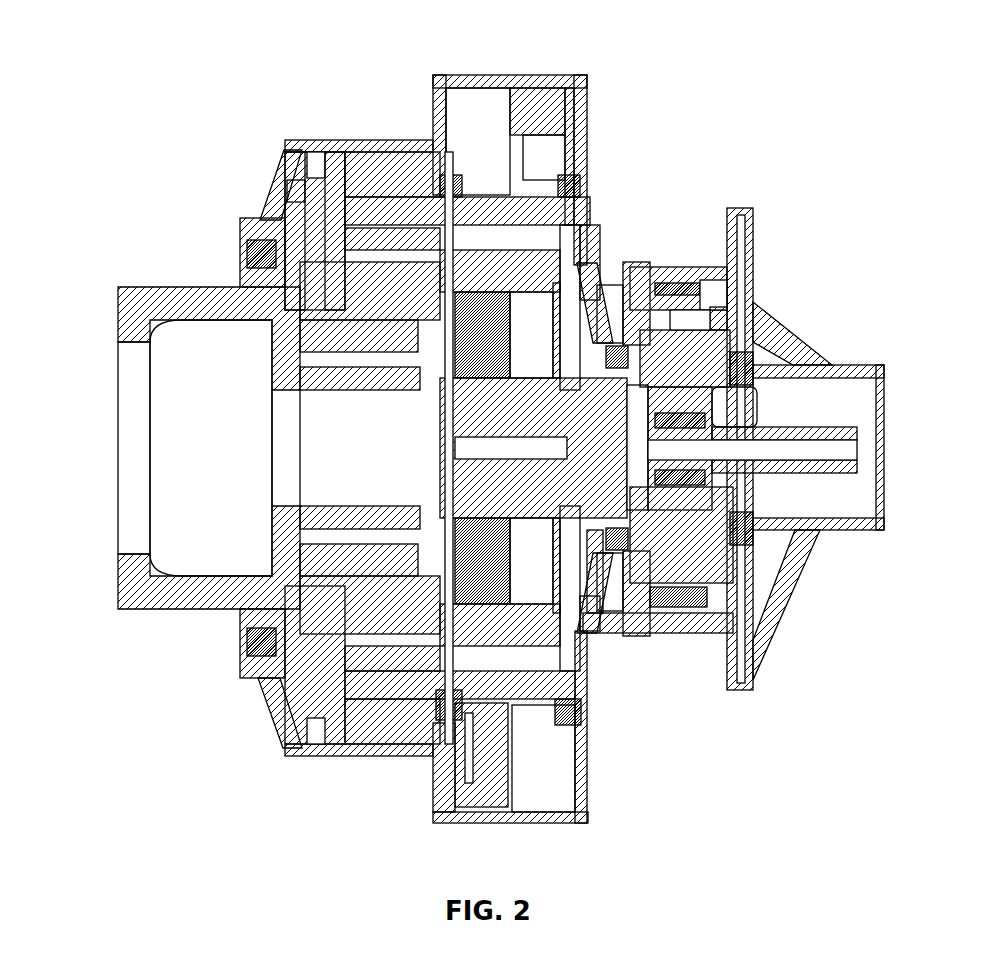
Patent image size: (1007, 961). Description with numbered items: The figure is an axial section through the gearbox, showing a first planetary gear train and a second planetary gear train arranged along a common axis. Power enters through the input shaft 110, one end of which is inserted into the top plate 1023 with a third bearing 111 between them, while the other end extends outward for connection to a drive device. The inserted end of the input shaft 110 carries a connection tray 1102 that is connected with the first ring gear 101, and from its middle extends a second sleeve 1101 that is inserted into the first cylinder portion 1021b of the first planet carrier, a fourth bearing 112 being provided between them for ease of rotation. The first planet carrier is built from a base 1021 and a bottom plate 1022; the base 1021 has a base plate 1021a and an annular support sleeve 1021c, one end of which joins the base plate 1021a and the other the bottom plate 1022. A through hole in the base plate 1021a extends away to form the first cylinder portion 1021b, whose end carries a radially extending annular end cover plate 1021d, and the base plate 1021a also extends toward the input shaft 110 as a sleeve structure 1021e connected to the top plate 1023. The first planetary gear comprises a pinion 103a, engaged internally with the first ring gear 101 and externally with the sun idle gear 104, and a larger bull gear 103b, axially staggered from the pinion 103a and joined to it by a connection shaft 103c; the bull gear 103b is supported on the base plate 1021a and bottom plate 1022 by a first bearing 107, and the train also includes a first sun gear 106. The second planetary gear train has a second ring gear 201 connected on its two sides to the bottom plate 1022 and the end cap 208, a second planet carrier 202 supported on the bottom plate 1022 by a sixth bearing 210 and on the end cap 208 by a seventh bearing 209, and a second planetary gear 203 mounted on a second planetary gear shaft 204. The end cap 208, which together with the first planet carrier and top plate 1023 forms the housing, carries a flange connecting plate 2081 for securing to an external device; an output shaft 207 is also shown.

The first ring gear 101 is at (375, 735).
The pinion 103a is at (310, 742).
The bull gear 103b is at (535, 100).
The connection shaft 103c is at (585, 222).
The sun idle gear 104 is at (373, 600).
The first sun gear 106 is at (472, 415).
The first bearing 107 is at (462, 185).
The input shaft 110 is at (112, 325).
The third bearing 111 is at (248, 256).
The fourth bearing 112 is at (415, 545).
The second sleeve 1101 is at (305, 515).
The connection tray 1102 is at (290, 190).
The base 1021 is at (355, 70).
The base plate 1021a is at (433, 97).
The first cylinder portion 1021b is at (362, 365).
The annular support sleeve 1021c is at (488, 78).
The annular end cover plate 1021d is at (290, 150).
The sleeve structure 1021e is at (373, 137).
The bottom plate 1022 is at (590, 115).
The top plate 1023 is at (262, 213).
The second ring gear 201 is at (677, 265).
The second planet carrier 202 is at (705, 548).
The second planetary gear 203 is at (740, 280).
The second planetary gear shaft 204 is at (720, 320).
The output shaft 207 is at (862, 462).
The end cap 208 is at (790, 345).
The flange connecting plate 2081 is at (745, 210).
The seventh bearing 209 is at (748, 380).
The sixth bearing 210 is at (615, 580).